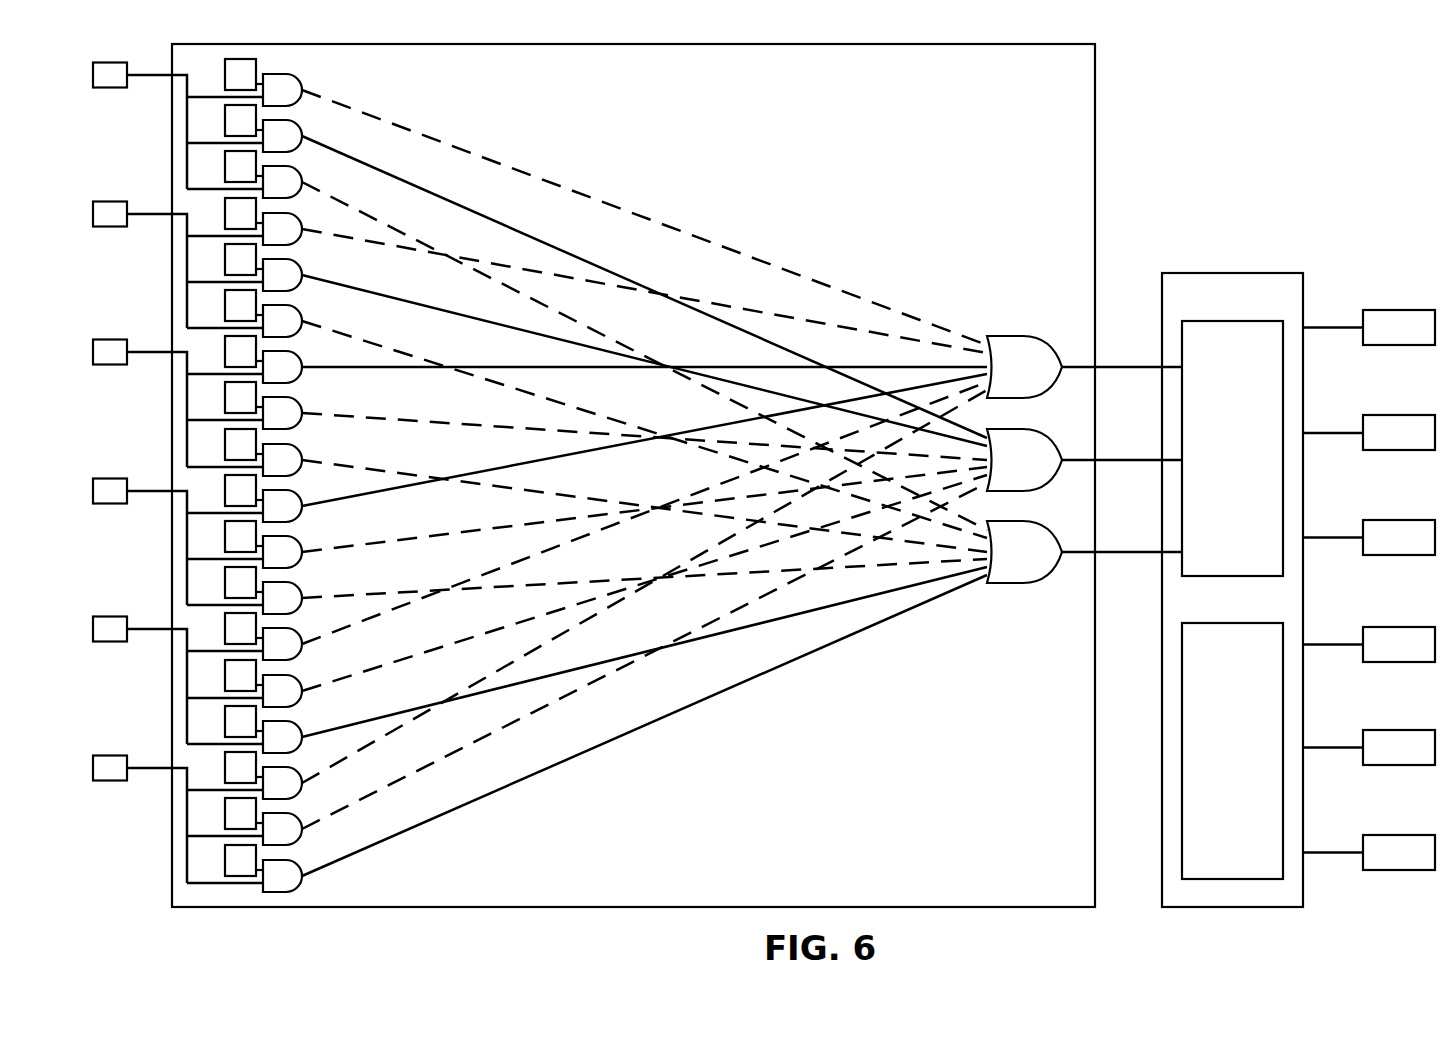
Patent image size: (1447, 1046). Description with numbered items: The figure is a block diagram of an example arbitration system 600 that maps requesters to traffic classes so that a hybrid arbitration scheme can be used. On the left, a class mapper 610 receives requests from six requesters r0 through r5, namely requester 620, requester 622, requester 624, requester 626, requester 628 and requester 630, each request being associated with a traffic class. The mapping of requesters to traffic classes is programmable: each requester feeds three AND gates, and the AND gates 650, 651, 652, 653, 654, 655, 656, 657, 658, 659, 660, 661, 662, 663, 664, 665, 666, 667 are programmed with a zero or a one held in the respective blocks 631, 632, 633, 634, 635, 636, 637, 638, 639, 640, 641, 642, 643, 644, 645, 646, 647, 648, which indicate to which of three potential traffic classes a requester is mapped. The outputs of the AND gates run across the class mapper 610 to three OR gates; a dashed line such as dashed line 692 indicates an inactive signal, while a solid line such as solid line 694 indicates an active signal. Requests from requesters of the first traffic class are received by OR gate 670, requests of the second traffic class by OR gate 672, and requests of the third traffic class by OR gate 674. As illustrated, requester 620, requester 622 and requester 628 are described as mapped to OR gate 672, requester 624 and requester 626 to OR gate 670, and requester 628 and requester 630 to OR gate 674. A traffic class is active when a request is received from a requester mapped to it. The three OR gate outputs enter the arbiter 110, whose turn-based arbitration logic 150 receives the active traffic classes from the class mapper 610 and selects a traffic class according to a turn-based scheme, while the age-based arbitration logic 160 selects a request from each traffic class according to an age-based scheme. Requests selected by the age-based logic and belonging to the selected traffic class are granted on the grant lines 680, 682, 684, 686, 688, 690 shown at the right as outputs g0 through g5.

The arbitration system 600 is at (1358, 918).
The class mapper 610 is at (1096, 91).
The arbiter 110 is at (1242, 273).
The turn-based arbitration logic 150 is at (1283, 382).
The age-based arbitration logic 160 is at (1283, 710).
The requester r0 620 is at (118, 63).
The requester r1 622 is at (118, 202).
The requester r2 624 is at (116, 340).
The requester r3 626 is at (116, 478).
The requester r4 628 is at (116, 617).
The requester r5 630 is at (116, 756).
The programming block 631 is at (257, 68).
The programming block 632 is at (257, 116).
The programming block 633 is at (257, 162).
The programming block 634 is at (257, 209).
The programming block 635 is at (257, 255).
The programming block 636 is at (257, 301).
The programming block 637 is at (257, 347).
The programming block 638 is at (257, 393).
The programming block 639 is at (257, 440).
The programming block 640 is at (257, 486).
The programming block 641 is at (257, 532).
The programming block 642 is at (257, 578).
The programming block 643 is at (257, 624).
The programming block 644 is at (257, 671).
The programming block 645 is at (257, 717).
The programming block 646 is at (257, 763).
The programming block 647 is at (257, 809).
The programming block 648 is at (257, 856).
The AND gate 650 is at (244, 90).
The AND gate 651 is at (244, 136).
The AND gate 652 is at (587, 348).
The AND gate 653 is at (587, 283).
The AND gate 654 is at (587, 352).
The AND gate 655 is at (587, 421).
The AND gate 656 is at (587, 367).
The AND gate 657 is at (587, 428).
The AND gate 658 is at (587, 498).
The AND gate 659 is at (587, 448).
The AND gate 660 is at (587, 517).
The AND gate 661 is at (587, 586).
The AND gate 662 is at (587, 521).
The AND gate 663 is at (587, 591).
The AND gate 664 is at (587, 660).
The AND gate 665 is at (587, 594).
The AND gate 666 is at (587, 664).
The AND gate 667 is at (587, 733).
The OR gate 670 is at (1084, 367).
The OR gate 672 is at (1084, 460).
The OR gate 674 is at (1084, 552).
The grant line 680 is at (1393, 310).
The grant line 682 is at (1393, 415).
The grant line 684 is at (1393, 520).
The grant line 686 is at (1393, 627).
The grant line 688 is at (1393, 730).
The grant line 690 is at (1393, 835).
The dashed line 692 is at (513, 168).
The solid line 694 is at (532, 237).